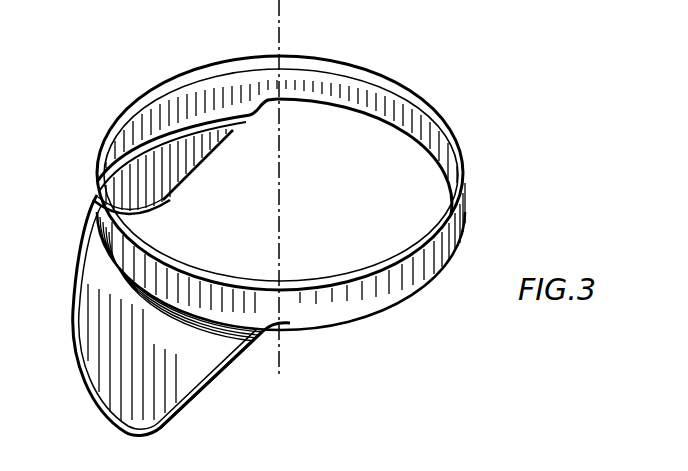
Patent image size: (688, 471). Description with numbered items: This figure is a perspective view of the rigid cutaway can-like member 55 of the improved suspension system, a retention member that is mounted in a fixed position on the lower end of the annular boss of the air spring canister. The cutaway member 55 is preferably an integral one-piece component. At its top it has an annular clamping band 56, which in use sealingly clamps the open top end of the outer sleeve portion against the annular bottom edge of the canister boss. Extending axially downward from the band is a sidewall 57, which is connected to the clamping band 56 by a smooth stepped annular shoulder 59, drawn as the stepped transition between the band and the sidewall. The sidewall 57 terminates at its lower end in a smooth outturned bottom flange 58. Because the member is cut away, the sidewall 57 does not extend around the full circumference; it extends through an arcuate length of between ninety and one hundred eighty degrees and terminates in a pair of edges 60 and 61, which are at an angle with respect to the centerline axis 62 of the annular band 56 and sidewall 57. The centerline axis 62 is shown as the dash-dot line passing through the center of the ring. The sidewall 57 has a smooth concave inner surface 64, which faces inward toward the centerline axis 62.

The cutaway can-like member 55 is at (443, 107).
The annular clamping band 56 is at (397, 282).
The sidewall 57 is at (163, 382).
The outturned bottom flange 58 is at (78, 387).
The stepped annular shoulder 59 is at (95, 259).
The edge 60 is at (177, 418).
The edge 61 is at (203, 160).
The centerline axis 62 is at (283, 192).
The concave inner surface 64 is at (153, 183).